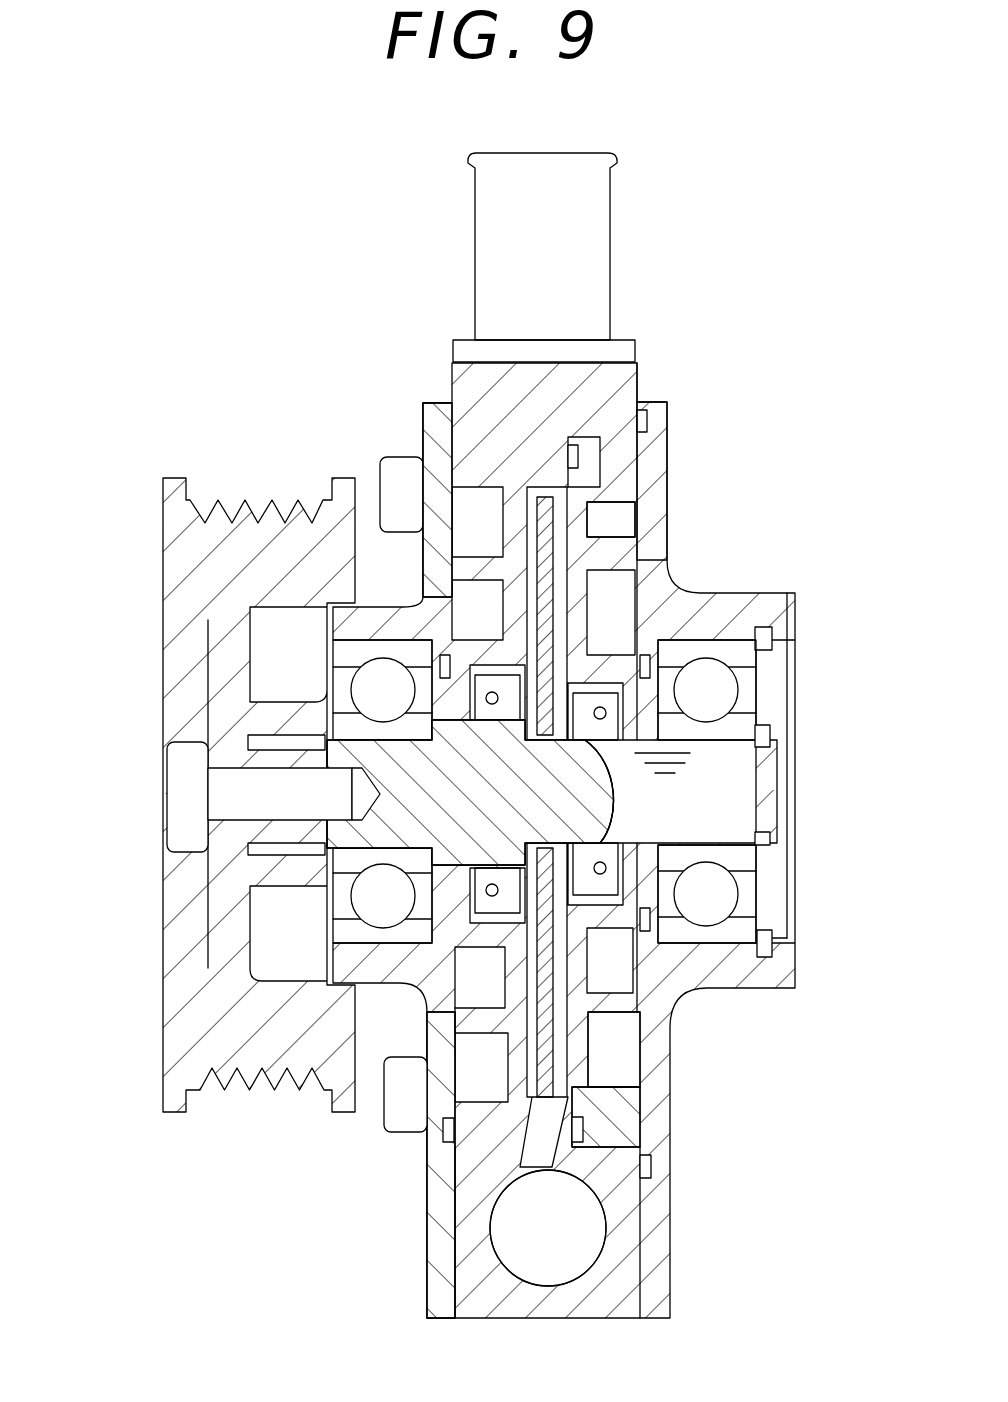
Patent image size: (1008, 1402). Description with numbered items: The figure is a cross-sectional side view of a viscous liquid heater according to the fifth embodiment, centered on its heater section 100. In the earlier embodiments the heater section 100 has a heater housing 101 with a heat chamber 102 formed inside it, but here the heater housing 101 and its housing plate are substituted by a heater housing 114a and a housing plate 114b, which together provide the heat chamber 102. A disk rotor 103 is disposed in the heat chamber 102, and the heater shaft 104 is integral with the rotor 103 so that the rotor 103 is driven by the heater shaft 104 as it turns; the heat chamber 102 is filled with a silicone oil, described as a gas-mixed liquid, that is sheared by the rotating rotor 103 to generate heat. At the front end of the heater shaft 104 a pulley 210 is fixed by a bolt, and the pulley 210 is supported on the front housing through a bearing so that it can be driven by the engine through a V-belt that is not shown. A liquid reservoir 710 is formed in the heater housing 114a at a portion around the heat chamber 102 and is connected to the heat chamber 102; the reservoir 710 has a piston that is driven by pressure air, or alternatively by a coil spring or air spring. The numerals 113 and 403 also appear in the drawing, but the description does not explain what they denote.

The heater section 100 is at (635, 340).
The heater housing 101 is at (436, 384).
The heat chamber 102 is at (560, 570).
The disk rotor 103 is at (537, 505).
The heater shaft 104 is at (720, 808).
The cavity 113 is at (618, 1052).
The heater housing 114a is at (437, 495).
The housing plate 114b is at (590, 523).
The pulley 210 is at (217, 559).
The oil 403 is at (603, 778).
The liquid reservoir 710 is at (573, 1237).